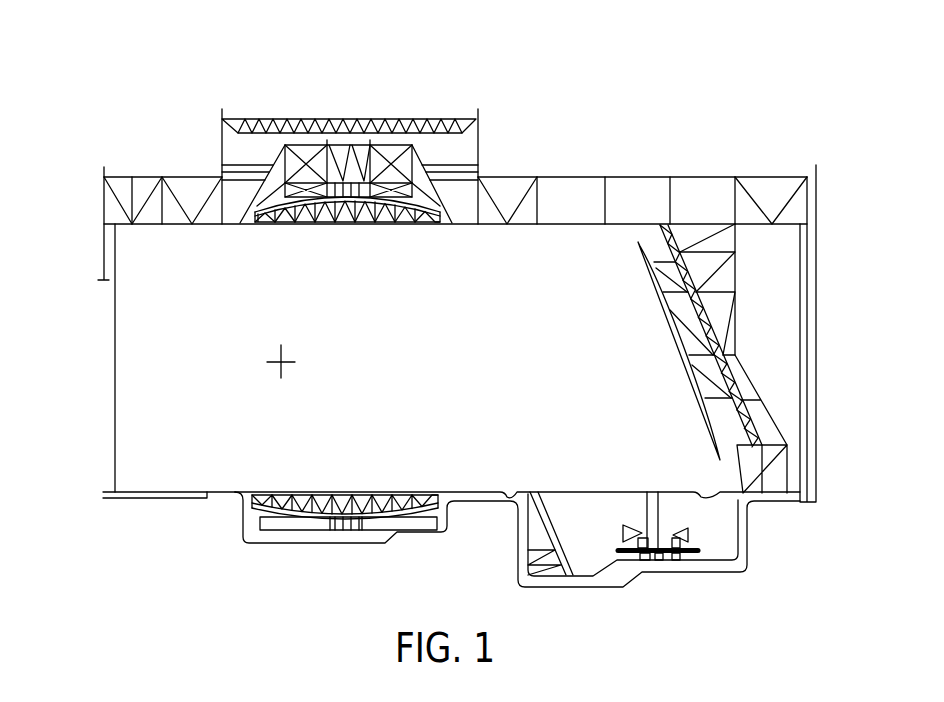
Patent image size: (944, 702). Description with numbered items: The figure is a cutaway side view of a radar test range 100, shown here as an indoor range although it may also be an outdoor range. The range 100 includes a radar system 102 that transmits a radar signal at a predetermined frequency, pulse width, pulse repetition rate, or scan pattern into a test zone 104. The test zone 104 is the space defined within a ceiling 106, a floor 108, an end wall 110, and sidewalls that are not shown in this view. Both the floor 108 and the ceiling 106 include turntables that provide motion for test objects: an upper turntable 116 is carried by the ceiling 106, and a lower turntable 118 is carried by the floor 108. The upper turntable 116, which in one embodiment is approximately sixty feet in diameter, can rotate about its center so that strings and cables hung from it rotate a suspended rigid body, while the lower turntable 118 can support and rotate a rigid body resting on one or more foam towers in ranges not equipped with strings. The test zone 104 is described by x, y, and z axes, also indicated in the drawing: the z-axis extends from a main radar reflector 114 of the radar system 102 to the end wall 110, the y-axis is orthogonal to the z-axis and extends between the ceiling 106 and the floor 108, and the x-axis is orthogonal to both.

The radar test range 100 is at (711, 92).
The radar system 102 is at (687, 555).
The test zone 104 is at (115, 336).
The ceiling 106 is at (168, 225).
The floor 108 is at (233, 490).
The end wall 110 is at (115, 411).
The main radar reflector 114 is at (665, 326).
The upper turntable (UTT) 116 is at (355, 224).
The lower turntable 118 is at (415, 492).